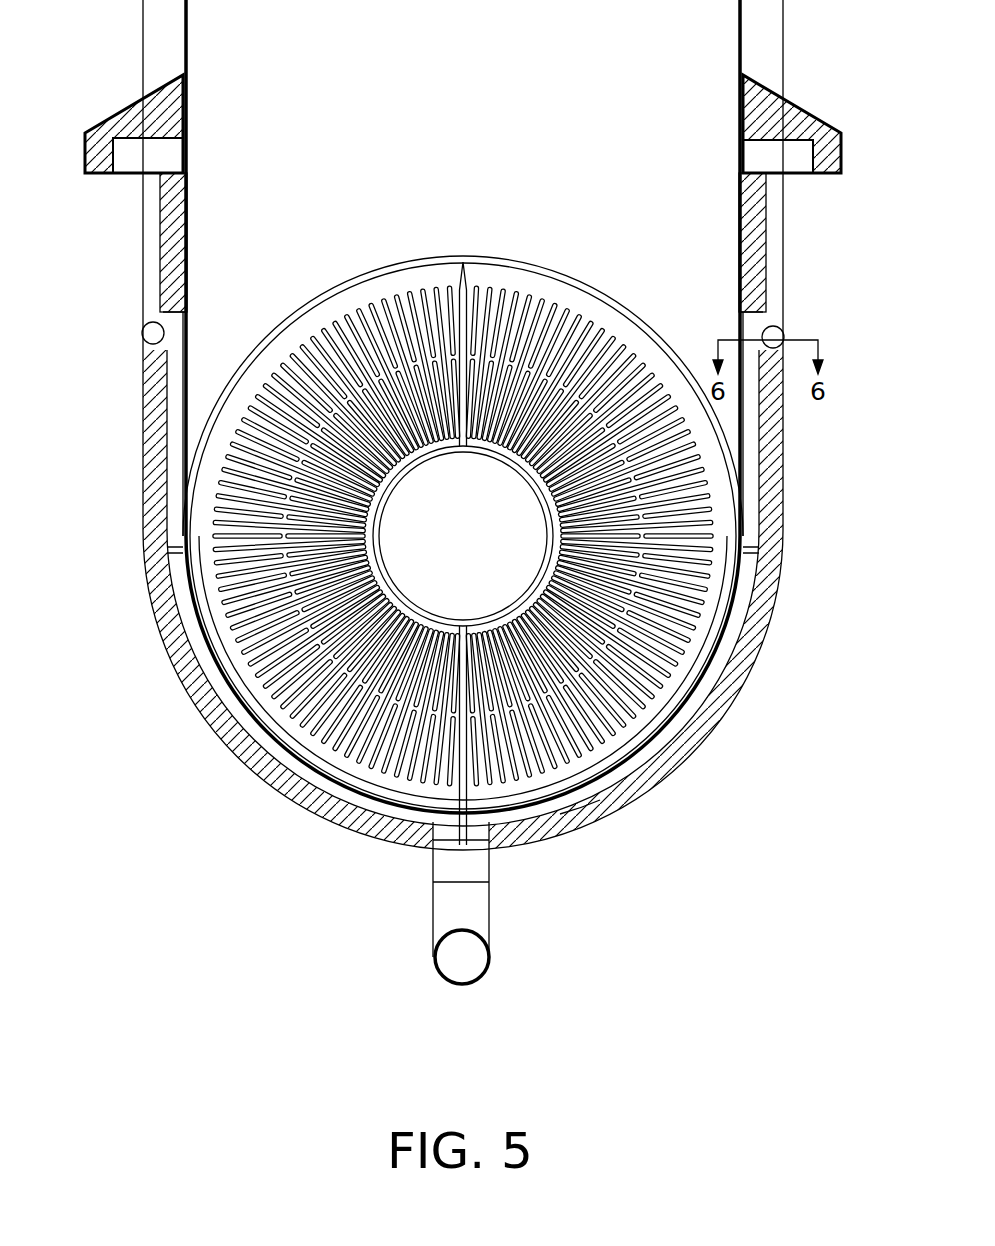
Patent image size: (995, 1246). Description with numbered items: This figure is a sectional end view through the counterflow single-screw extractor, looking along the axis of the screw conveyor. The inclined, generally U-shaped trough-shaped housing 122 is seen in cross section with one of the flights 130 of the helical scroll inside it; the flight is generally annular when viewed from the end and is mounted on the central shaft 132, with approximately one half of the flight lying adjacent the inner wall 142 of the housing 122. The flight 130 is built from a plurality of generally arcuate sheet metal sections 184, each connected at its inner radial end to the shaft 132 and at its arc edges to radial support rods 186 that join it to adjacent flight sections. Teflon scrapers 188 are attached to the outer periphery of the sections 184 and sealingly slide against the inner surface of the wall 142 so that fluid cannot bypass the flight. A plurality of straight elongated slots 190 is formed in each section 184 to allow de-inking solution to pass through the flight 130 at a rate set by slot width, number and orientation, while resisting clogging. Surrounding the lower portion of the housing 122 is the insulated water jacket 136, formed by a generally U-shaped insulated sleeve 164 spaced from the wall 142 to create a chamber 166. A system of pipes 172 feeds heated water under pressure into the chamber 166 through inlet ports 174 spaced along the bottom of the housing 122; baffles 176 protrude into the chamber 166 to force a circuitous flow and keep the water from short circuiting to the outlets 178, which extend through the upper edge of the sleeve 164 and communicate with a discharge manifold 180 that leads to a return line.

The housing 122 is at (191, 35).
The flight 130 is at (553, 268).
The shaft 132 is at (385, 560).
The insulated jacket 136 is at (783, 428).
The inner wall 142 is at (190, 326).
The insulated sleeve 164 is at (770, 504).
The chamber 166 is at (762, 532).
The pipes 172 is at (492, 958).
The inlet ports 174 is at (436, 900).
The baffles 176 is at (648, 792).
The outlets 178 is at (148, 336).
The discharge manifold 180 is at (124, 173).
The arcuate sections 184 is at (182, 513).
The radial support rods 186 is at (468, 292).
The scrapers 188 is at (458, 270).
The elongated slots 190 is at (595, 372).